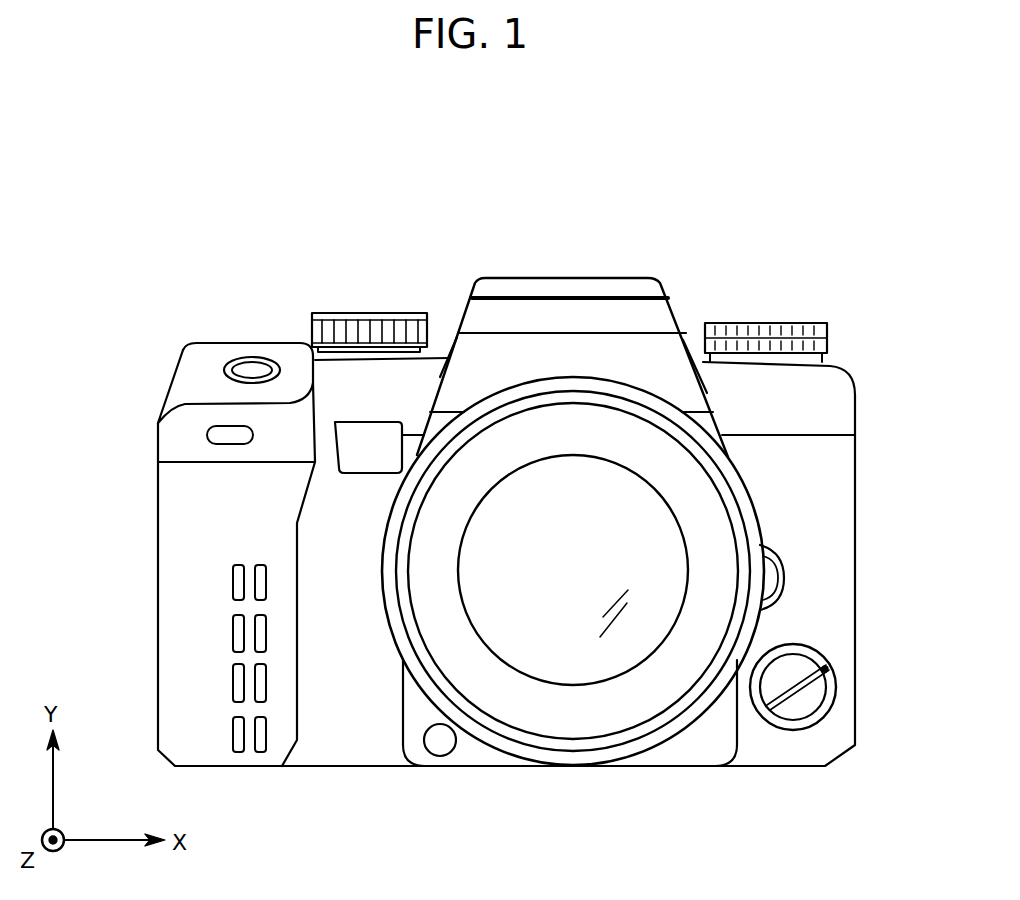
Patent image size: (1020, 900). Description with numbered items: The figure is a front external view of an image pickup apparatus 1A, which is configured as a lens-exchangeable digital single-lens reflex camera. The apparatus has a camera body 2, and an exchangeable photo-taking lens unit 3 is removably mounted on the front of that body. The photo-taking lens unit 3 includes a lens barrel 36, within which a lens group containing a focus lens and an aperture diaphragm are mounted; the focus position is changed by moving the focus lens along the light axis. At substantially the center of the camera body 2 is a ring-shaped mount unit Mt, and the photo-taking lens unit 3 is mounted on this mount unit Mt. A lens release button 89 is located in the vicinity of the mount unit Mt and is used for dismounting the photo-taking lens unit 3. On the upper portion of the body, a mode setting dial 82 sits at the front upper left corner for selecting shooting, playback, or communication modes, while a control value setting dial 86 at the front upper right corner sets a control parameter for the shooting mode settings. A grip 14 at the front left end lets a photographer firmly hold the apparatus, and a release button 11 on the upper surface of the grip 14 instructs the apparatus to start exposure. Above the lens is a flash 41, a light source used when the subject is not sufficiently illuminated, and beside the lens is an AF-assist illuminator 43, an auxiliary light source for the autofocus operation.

The image pickup apparatus 1A is at (137, 162).
The camera body 2 is at (855, 545).
The photo-taking lens unit 3 is at (600, 717).
The release button 11 is at (256, 366).
The grip 14 is at (176, 607).
The lens barrel 36 is at (745, 483).
The flash 41 is at (680, 263).
The AF-assist illuminator 43 is at (357, 468).
The mode setting dial 82 is at (363, 313).
The control value setting dial 86 is at (762, 323).
The lens release button 89 is at (784, 580).
The mount unit Mt is at (384, 610).